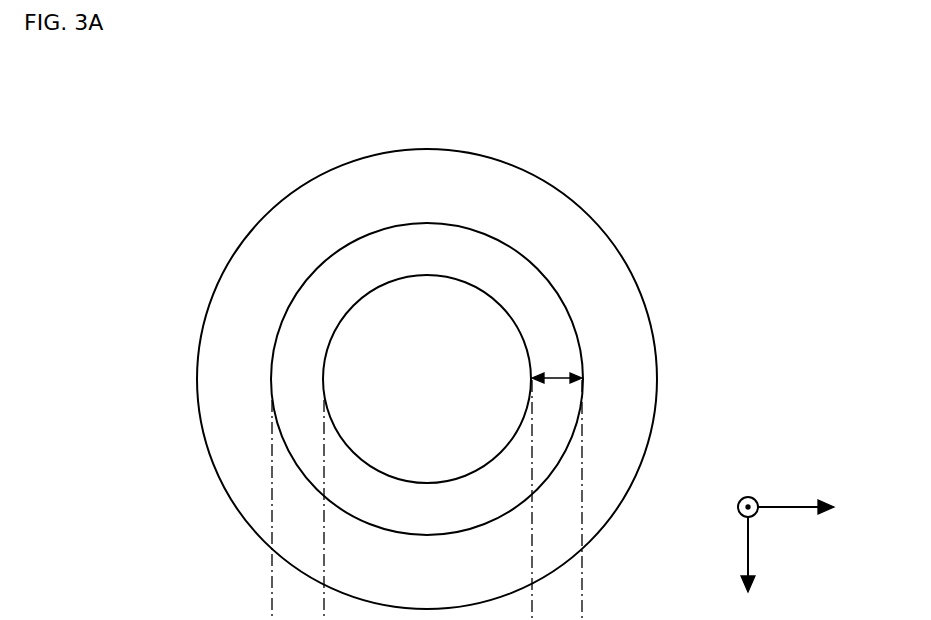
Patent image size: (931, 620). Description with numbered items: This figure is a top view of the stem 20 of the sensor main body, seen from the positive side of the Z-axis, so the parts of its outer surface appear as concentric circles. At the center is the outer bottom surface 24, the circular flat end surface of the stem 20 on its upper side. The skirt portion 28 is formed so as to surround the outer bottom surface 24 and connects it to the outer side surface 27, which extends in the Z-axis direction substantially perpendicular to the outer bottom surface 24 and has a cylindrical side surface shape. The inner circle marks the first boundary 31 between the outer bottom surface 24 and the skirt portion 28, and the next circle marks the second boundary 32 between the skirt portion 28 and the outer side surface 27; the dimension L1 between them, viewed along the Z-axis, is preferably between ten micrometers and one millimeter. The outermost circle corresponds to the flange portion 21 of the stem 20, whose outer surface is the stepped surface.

The stem 20 is at (637, 90).
The flange portion 21 is at (540, 218).
The outer bottom surface 24 is at (425, 312).
The outer side surface 27 is at (349, 242).
The skirt portion 28 is at (517, 283).
The first boundary 31 is at (532, 381).
The second boundary 32 is at (582, 378).